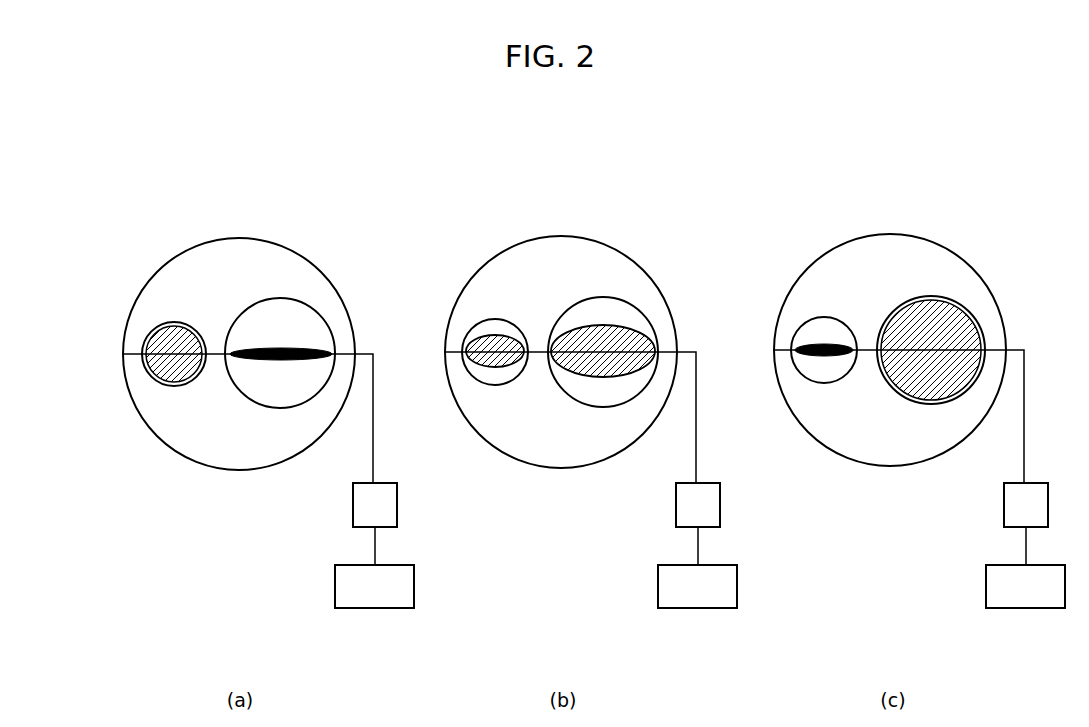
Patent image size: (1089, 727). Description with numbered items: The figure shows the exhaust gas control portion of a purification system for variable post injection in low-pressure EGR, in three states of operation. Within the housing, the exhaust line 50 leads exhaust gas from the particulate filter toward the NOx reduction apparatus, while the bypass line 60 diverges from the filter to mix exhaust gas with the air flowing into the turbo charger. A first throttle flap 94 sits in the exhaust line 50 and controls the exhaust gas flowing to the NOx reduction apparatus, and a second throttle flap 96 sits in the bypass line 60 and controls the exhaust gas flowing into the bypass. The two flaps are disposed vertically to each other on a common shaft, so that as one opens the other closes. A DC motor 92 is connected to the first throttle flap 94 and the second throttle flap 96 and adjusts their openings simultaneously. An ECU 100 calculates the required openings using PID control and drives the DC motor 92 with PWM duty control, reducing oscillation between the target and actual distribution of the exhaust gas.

The exhaust line 50 is at (280, 298).
The bypass line 60 is at (171, 322).
The DC motor 92 is at (353, 506).
The first throttle flap 94 is at (300, 352).
The second throttle flap 96 is at (173, 367).
The ECU 100 is at (335, 587).